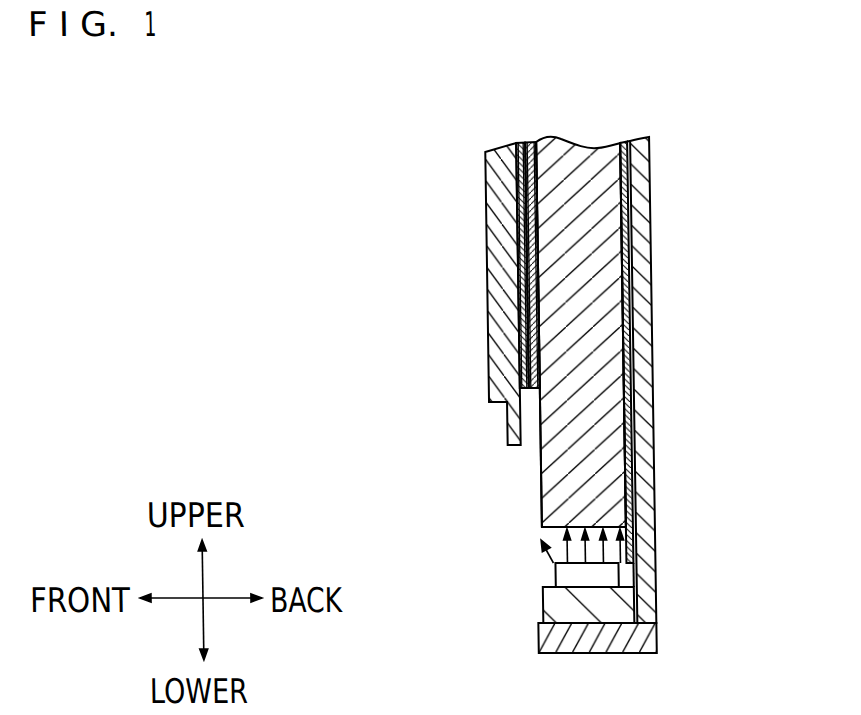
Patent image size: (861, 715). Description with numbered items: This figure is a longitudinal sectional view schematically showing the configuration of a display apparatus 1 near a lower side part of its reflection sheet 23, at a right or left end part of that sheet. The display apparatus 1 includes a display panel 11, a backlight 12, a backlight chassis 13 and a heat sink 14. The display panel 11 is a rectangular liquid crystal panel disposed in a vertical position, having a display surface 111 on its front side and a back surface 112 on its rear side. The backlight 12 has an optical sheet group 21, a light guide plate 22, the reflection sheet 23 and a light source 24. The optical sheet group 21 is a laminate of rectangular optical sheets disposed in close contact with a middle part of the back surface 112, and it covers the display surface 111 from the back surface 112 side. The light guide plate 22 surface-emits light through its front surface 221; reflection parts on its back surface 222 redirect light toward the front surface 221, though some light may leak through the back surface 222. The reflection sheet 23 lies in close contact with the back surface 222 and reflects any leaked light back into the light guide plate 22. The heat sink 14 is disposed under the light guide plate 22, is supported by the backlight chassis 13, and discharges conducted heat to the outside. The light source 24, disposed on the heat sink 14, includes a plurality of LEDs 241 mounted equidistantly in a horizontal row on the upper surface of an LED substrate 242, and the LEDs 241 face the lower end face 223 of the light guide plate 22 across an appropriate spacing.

The display apparatus 1 is at (344, 126).
The display panel 11 is at (359, 233).
The display surface 111 is at (495, 265).
The back surface 112 is at (523, 307).
The optical sheet group 21 is at (533, 352).
The light guide plate 22 is at (613, 190).
The front surface 221 is at (543, 220).
The back surface 222 is at (628, 247).
The lower end face 223 is at (545, 521).
The reflection sheet 23 is at (632, 402).
The backlight chassis 13 is at (646, 343).
The backlight 12 is at (538, 560).
The light source 24 is at (745, 540).
The LED 241 is at (607, 574).
The LED substrate 242 is at (613, 608).
The heat sink 14 is at (564, 653).